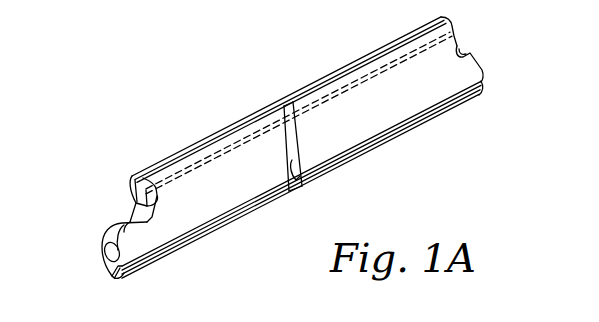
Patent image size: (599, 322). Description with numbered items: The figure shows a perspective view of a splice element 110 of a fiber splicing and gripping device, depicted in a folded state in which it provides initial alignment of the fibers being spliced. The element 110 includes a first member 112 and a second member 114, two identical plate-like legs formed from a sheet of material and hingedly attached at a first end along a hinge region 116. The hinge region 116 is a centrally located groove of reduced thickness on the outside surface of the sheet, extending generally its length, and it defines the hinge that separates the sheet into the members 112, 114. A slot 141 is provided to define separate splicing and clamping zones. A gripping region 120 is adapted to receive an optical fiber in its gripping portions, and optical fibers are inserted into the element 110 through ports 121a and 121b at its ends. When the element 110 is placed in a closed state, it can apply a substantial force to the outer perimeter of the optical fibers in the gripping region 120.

The splice element 110 is at (212, 90).
The first member 112 is at (350, 64).
The second member 114 is at (375, 117).
The hinge region 116 is at (229, 224).
The gripping region 120 is at (103, 250).
The port 121a is at (124, 268).
The port 121b is at (484, 67).
The slot 141 is at (294, 180).